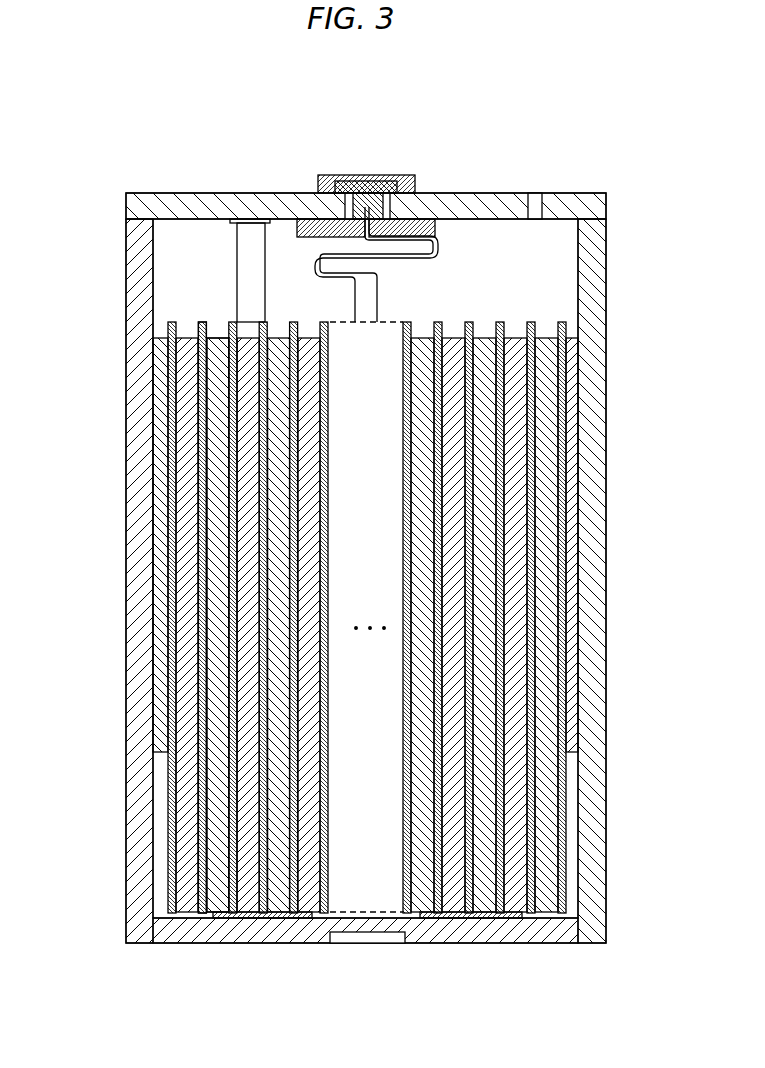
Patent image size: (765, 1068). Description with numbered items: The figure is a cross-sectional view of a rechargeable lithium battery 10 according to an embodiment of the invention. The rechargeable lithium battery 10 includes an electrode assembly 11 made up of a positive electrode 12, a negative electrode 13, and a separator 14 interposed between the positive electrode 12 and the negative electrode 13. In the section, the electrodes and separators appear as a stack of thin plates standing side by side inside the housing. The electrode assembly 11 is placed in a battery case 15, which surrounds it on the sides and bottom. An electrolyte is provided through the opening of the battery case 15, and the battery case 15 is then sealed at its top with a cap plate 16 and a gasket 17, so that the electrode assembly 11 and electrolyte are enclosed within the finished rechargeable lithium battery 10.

The rechargeable lithium battery 10 is at (401, 99).
The electrode assembly 11 is at (368, 582).
The positive electrode 12 is at (543, 813).
The negative electrode 13 is at (213, 675).
The separator 14 is at (198, 813).
The battery case 15 is at (137, 287).
The cap plate 16 is at (467, 196).
The gasket 17 is at (326, 175).